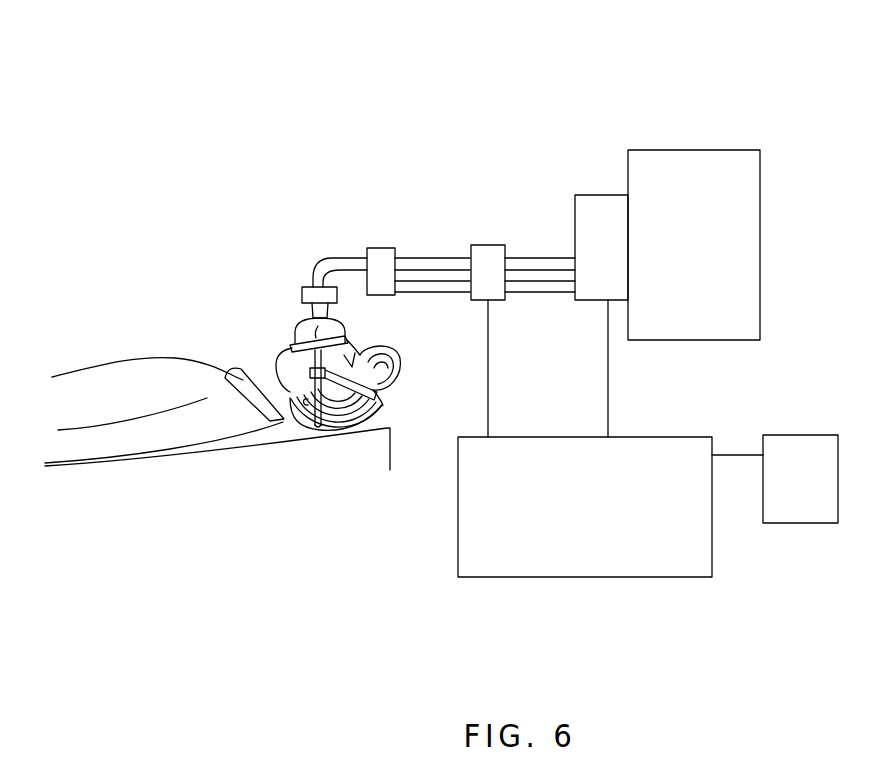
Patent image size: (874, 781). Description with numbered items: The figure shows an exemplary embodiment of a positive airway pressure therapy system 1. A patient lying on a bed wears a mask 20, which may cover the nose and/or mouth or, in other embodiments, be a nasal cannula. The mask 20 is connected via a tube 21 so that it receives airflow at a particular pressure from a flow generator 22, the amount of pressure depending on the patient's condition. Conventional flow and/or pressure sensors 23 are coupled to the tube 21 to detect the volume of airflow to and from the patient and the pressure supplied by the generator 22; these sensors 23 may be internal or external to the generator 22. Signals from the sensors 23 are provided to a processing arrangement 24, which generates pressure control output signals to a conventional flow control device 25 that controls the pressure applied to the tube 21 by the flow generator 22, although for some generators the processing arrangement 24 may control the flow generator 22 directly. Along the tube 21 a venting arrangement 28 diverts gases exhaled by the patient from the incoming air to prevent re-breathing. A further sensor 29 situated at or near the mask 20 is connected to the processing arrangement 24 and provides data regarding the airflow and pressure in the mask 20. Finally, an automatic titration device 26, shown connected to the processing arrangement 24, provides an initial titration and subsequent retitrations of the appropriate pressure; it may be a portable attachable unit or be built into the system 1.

The system 1 is at (318, 103).
The mask 20 is at (292, 330).
The tube 21 is at (312, 277).
The flow generator 22 is at (718, 150).
The flow and/or pressure sensors 23 is at (485, 245).
The processing arrangement 24 is at (640, 577).
The flow control device 25 is at (605, 195).
The automatic titration device 26 is at (793, 435).
The venting arrangement 28 is at (370, 248).
The further sensor 29 is at (305, 286).